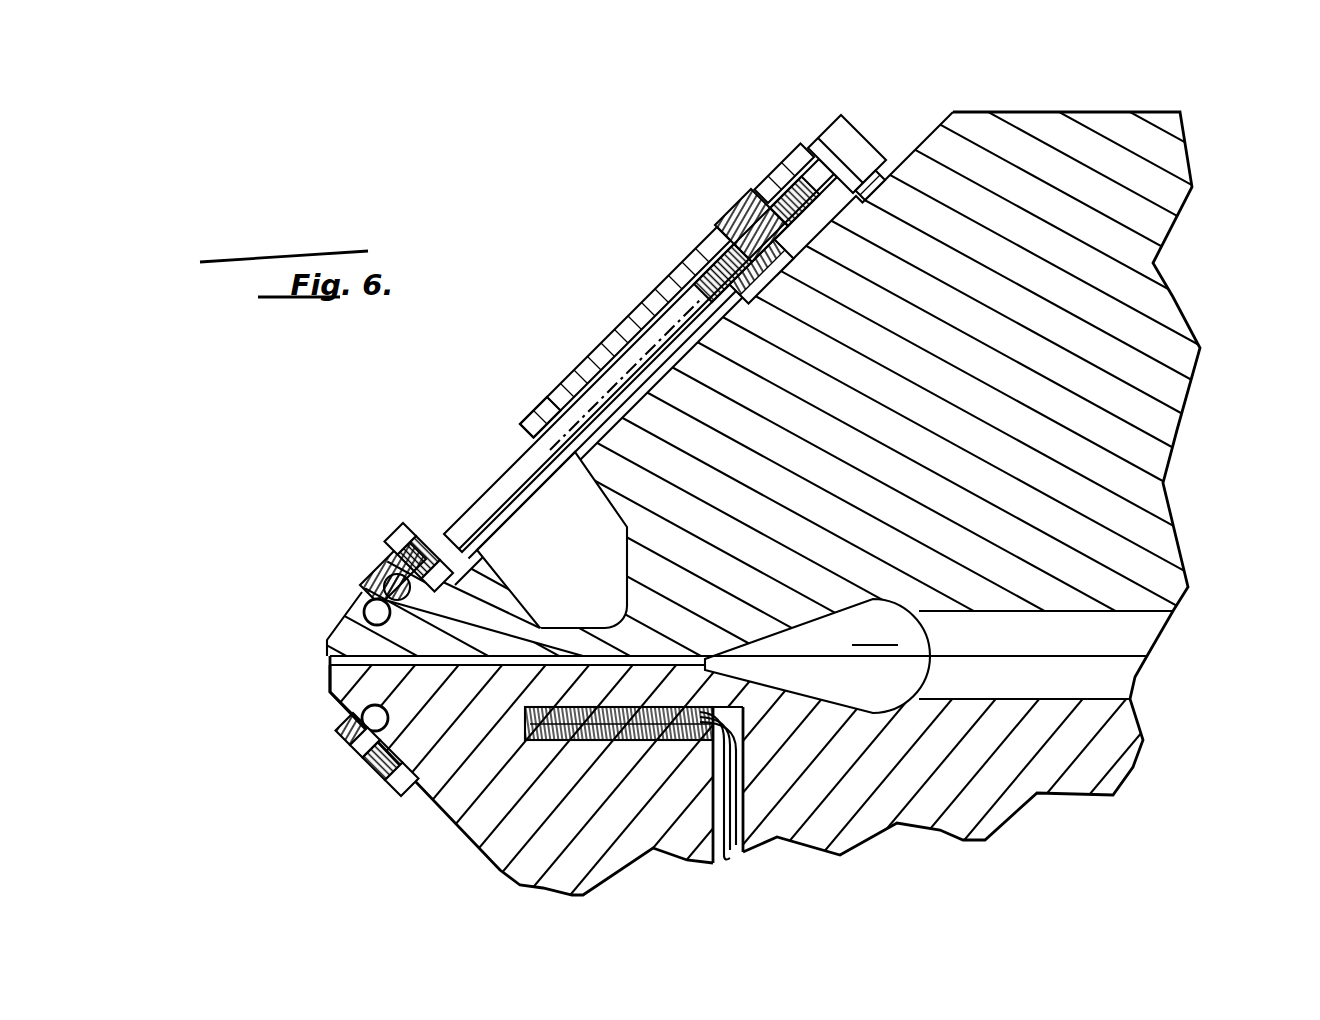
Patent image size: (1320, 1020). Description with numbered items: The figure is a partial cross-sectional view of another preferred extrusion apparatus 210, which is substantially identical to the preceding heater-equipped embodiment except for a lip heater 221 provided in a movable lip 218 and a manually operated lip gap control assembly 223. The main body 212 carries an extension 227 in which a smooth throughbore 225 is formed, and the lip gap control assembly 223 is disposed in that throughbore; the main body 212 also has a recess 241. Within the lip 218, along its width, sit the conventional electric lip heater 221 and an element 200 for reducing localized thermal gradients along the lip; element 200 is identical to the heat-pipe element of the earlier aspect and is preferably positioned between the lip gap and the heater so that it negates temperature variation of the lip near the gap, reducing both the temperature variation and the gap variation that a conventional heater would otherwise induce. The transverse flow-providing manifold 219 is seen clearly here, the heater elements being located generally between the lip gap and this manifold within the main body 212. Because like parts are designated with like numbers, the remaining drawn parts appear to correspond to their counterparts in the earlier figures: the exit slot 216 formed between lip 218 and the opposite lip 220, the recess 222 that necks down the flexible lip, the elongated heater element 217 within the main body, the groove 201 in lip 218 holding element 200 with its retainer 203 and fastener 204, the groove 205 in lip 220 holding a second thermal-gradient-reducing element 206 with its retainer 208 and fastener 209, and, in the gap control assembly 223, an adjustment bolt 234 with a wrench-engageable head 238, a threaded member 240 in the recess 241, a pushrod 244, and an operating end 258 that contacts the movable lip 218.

The element for reducing localized thermal gradients 200 is at (352, 598).
The pin 201 is at (395, 608).
The pin 203 is at (378, 580).
The nut 204 is at (405, 524).
The pin 205 is at (382, 710).
The clamp block 206 is at (348, 733).
The washer 208 is at (362, 752).
The nut 209 is at (374, 784).
The extrusion apparatus 210 is at (684, 296).
The main body 212 is at (1176, 291).
The plate 216 is at (328, 659).
The coil 217 is at (589, 742).
The lip 218 is at (345, 640).
The transverse flow-providing manifold 219 is at (817, 656).
The lower edge 220 is at (343, 677).
The lip heater 221 is at (395, 558).
The recess 222 is at (625, 552).
The lip gap control assembly 223 is at (628, 343).
The smooth throughbore 225 is at (592, 376).
The extension 227 is at (771, 180).
The bolt head 234 is at (838, 113).
The washer 238 is at (871, 146).
The nut 240 is at (729, 214).
The recess 241 is at (777, 270).
The edge 244 is at (686, 350).
The rod 258 is at (470, 512).